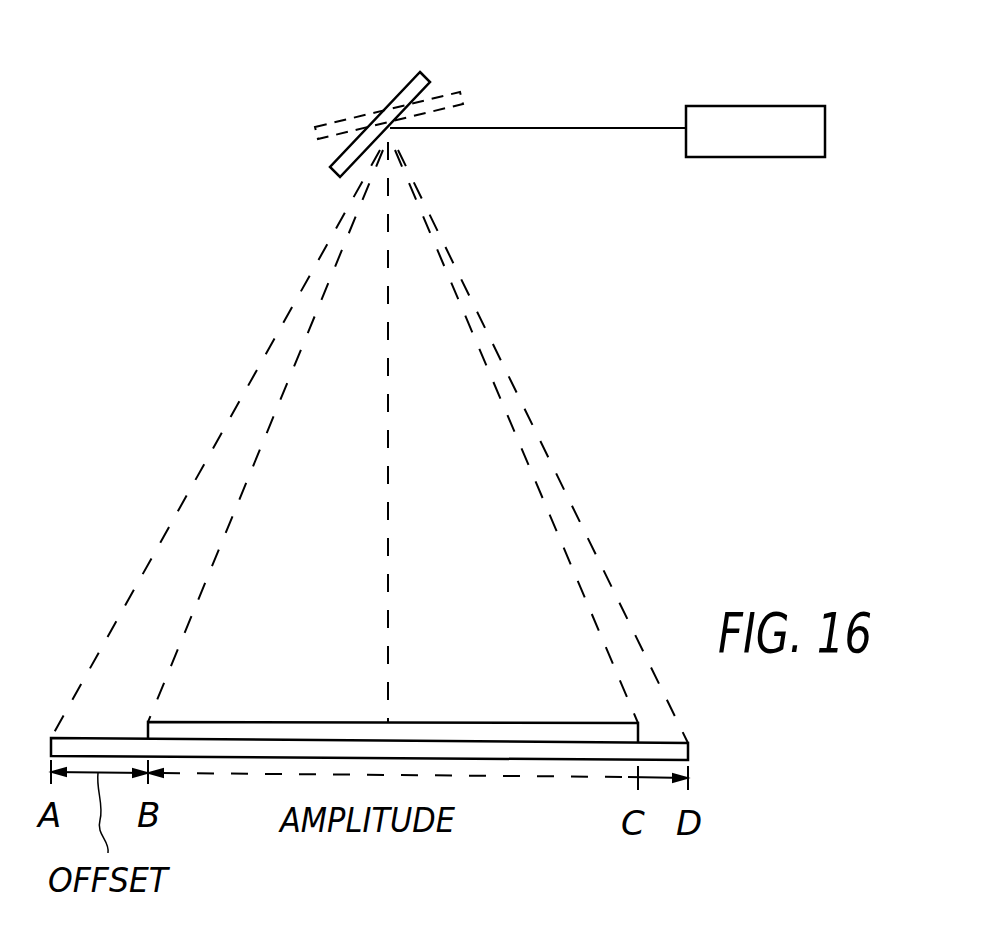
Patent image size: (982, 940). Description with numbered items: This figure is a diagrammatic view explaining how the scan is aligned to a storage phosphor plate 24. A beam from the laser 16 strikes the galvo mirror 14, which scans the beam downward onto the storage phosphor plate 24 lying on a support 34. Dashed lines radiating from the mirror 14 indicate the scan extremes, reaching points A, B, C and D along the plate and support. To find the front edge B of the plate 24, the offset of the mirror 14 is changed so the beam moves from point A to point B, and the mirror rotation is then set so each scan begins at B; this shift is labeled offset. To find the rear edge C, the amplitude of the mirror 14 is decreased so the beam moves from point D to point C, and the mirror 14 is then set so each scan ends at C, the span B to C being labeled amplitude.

The galvo mirror 14 is at (425, 72).
The laser 16 is at (770, 106).
The storage phosphor plate 24 is at (477, 723).
The substrate / support plate 34 is at (688, 752).